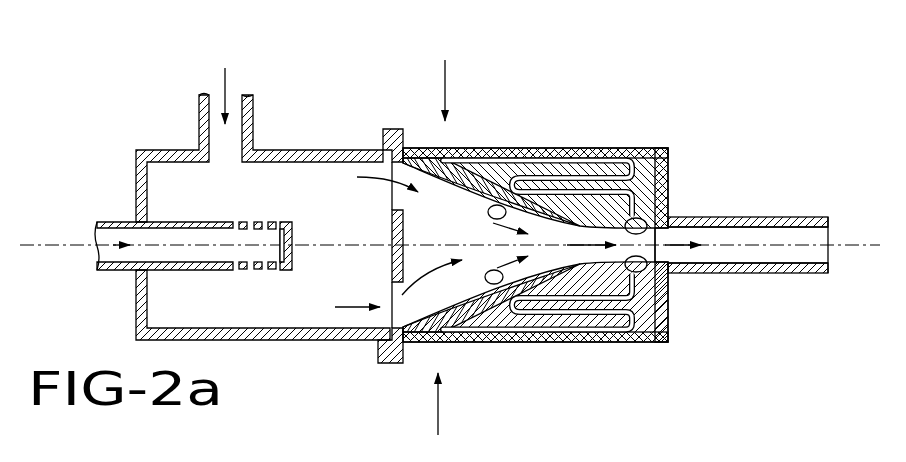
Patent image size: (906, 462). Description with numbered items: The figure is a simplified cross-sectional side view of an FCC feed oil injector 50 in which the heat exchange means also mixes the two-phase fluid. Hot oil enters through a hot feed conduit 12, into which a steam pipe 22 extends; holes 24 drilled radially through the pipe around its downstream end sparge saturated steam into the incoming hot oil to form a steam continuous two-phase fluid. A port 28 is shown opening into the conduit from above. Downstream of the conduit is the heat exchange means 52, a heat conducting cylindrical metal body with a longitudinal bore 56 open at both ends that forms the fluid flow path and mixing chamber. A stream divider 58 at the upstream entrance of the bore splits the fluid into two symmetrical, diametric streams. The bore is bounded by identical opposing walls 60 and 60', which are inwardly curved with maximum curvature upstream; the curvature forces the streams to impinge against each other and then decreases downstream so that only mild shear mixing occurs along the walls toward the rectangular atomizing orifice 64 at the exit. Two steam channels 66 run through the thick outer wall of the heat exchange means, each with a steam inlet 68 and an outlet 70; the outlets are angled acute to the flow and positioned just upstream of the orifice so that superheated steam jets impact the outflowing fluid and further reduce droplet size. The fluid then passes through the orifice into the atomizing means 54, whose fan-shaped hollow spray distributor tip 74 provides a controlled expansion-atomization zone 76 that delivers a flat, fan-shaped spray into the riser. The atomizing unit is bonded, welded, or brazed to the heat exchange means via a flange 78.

The FCC feed oil injector 50 is at (140, 118).
The hot feed conduit 12 is at (308, 341).
The steam pipe 22 is at (123, 272).
The holes 24 is at (272, 220).
The inlet port 28 is at (254, 118).
The stream divider 58 is at (392, 230).
The longitudinal bore 56 is at (457, 236).
The heat exchange means 52 is at (528, 147).
The steam channels 66 is at (566, 152).
The steam inlet 68 is at (443, 154).
The steam outlet 70 is at (626, 220).
The opposing wall 60 is at (482, 331).
The opposing wall 60' is at (487, 160).
The flange 78 is at (668, 150).
The atomizing means 54 is at (690, 216).
The spray distributor tip 74 is at (815, 217).
The expansion-atomization zone 76 is at (758, 254).
The atomizing orifice 64 is at (663, 257).